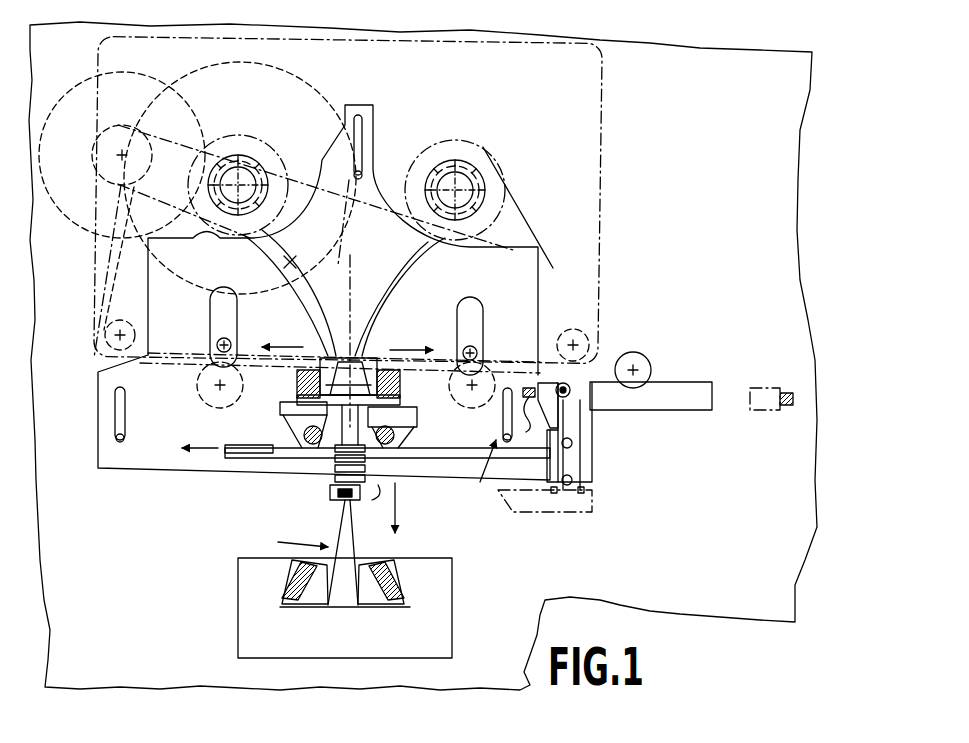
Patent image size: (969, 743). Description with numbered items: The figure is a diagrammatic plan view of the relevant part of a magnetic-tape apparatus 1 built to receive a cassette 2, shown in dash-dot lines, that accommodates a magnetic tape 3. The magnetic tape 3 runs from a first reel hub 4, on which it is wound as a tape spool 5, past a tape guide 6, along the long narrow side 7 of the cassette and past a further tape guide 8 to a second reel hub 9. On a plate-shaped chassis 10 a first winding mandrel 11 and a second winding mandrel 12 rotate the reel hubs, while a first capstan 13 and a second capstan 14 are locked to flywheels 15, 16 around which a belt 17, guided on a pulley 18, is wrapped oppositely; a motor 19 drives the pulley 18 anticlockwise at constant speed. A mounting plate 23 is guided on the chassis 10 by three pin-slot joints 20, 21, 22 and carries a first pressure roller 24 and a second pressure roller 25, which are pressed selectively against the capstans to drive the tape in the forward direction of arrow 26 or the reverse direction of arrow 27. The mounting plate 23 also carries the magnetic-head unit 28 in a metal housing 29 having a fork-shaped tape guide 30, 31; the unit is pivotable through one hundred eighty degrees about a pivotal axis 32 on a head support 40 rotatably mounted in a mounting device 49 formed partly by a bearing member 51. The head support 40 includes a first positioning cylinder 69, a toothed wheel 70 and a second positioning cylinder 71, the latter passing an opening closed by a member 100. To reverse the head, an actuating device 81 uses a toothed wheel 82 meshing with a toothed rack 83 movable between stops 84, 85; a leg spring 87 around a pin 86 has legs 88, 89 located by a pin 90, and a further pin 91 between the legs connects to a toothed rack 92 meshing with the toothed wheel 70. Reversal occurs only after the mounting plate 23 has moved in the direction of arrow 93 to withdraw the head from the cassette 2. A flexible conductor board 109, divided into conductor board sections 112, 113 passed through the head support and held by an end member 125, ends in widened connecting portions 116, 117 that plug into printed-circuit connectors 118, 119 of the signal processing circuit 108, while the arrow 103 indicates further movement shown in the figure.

The magnetic-tape apparatus 1 is at (757, 628).
The cassette 2 is at (608, 126).
The magnetic tape 3 is at (517, 218).
The first reel hub 4 is at (230, 150).
The tape spool 5 is at (262, 73).
The tape guide 6 is at (125, 320).
The long narrow side 7 is at (175, 364).
The further tape guide 8 is at (562, 337).
The second reel hub 9 is at (433, 148).
The chassis 10 is at (483, 678).
The first winding mandrel 11 is at (250, 162).
The second winding mandrel 12 is at (466, 180).
The first capstan 13 is at (476, 348).
The second capstan 14 is at (218, 340).
The flywheel 15 is at (420, 258).
The flywheel 16 is at (291, 262).
The belt 17 is at (160, 195).
The pulley 18 is at (122, 150).
The motor 19 is at (63, 98).
The pin-slot joint 20 is at (117, 452).
The pin-slot joint 21 is at (362, 110).
The pin-slot joint 22 is at (467, 513).
The mounting plate 23 is at (165, 466).
The first pressure roller 24 is at (496, 366).
The second pressure roller 25 is at (206, 403).
The arrow 26 is at (410, 346).
The arrow 27 is at (285, 344).
The magnetic-head unit 28 is at (362, 350).
The metal housing 29 is at (300, 400).
The fork-shaped tape guide 30 is at (378, 350).
The fork-shaped tape guide 31 is at (333, 348).
The pivotal axis 32 is at (353, 300).
The head support 40 is at (400, 399).
The mounting device 49 is at (412, 427).
The bearing member 51 is at (280, 410).
The first positioning cylinder 69 is at (290, 458).
The toothed wheel 70 is at (318, 463).
The second positioning cylinder 71 is at (330, 479).
The actuating device 81 is at (667, 371).
The toothed wheel 82 is at (645, 358).
The toothed rack 83 is at (687, 401).
The stop 84 is at (520, 415).
The stop 85 is at (786, 405).
The pin 86 is at (572, 397).
The leg spring 87 is at (589, 380).
The leg 88 is at (567, 497).
The leg 89 is at (586, 489).
The pin 90 is at (573, 434).
The further pin 91 is at (573, 457).
The toothed rack 92 is at (237, 446).
The arrow 93 is at (400, 506).
The member 100 is at (400, 476).
The slide direction arrow 103 is at (213, 456).
The signal processing circuit 108 is at (236, 640).
The flexible conductor board 109 is at (239, 550).
The conductor board section 112 is at (352, 535).
The conductor board section 113 is at (343, 521).
The connecting portion 116 is at (368, 598).
The connecting portion 117 is at (321, 596).
The printed-circuit connector 118 is at (400, 604).
The printed-circuit connector 119 is at (284, 604).
The end member 125 is at (358, 536).